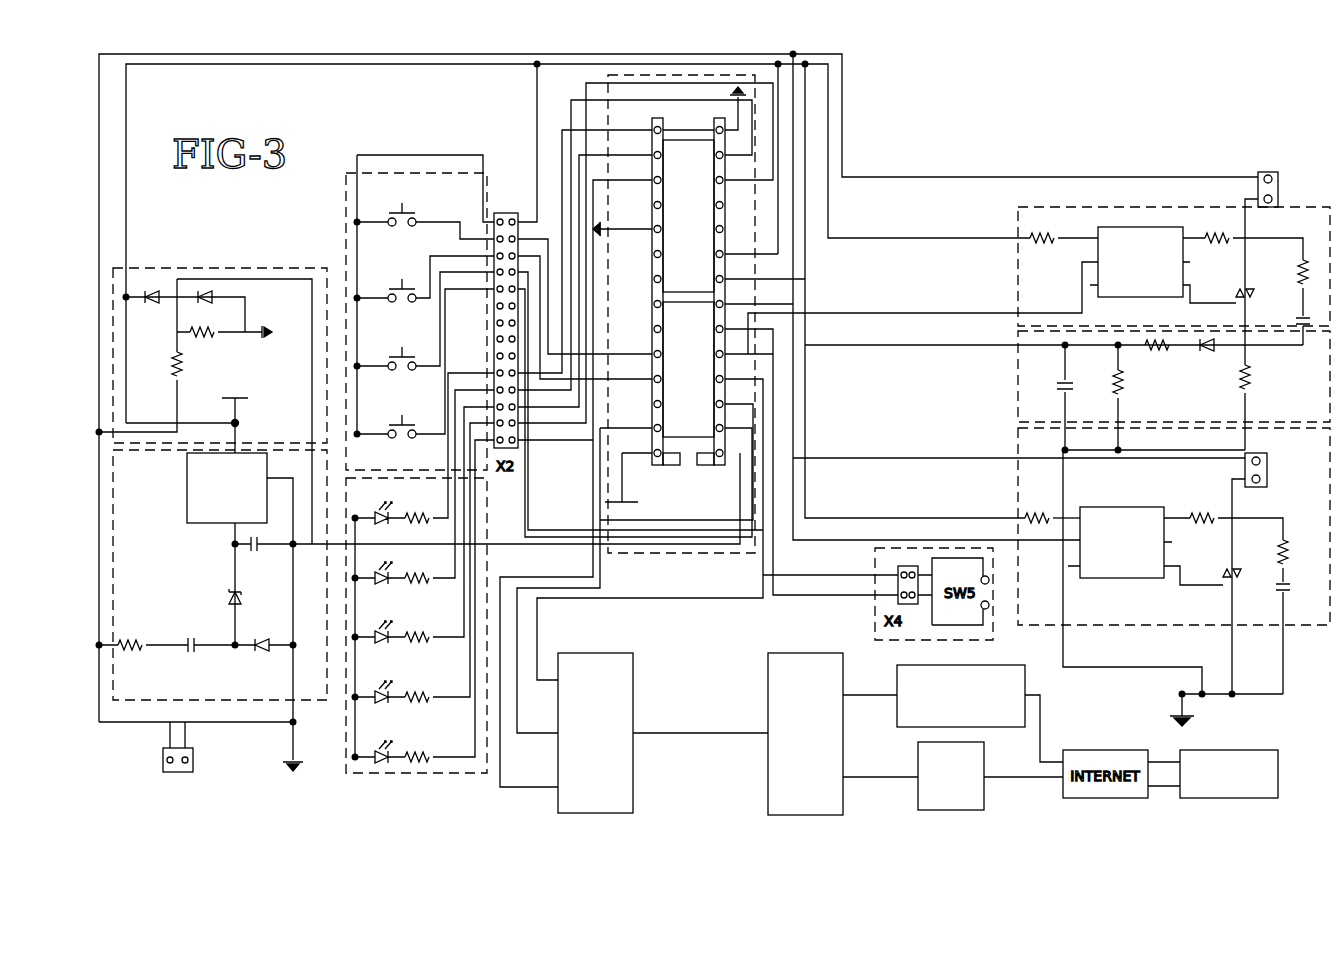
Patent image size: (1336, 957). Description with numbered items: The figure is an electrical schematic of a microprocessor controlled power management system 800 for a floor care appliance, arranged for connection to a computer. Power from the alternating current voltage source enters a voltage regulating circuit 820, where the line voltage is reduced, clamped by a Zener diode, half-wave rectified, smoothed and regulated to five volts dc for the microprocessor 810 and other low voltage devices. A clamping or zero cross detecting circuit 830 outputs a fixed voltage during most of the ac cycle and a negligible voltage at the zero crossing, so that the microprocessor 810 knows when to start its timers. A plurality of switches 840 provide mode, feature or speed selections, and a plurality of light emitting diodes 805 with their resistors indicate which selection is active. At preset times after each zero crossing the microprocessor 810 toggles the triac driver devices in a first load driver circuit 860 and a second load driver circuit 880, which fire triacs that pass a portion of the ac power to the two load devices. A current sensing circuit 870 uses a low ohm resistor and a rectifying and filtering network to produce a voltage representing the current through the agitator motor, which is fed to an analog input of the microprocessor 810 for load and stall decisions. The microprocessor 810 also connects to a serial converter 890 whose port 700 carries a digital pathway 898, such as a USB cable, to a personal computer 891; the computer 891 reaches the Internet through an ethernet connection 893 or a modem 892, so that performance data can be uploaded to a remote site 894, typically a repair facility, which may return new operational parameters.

The power management system 800 is at (935, 131).
The light emitting diodes 805 is at (455, 775).
The microprocessor 810 is at (757, 120).
The voltage regulating circuit 820 is at (247, 698).
The zero cross detecting circuit 830 is at (165, 268).
The switches 840 is at (372, 165).
The first load driver circuit 860 is at (1030, 207).
The current sensing circuit 870 is at (1018, 385).
The second load driver circuit 880 is at (1018, 492).
The RS-232 converter 890 is at (608, 815).
The port 700 is at (637, 736).
The digital pathway 898 is at (757, 738).
The computer 891 is at (843, 797).
The modem 892 is at (952, 811).
The ethernet connection 893 is at (893, 695).
The remote site 894 is at (1222, 750).